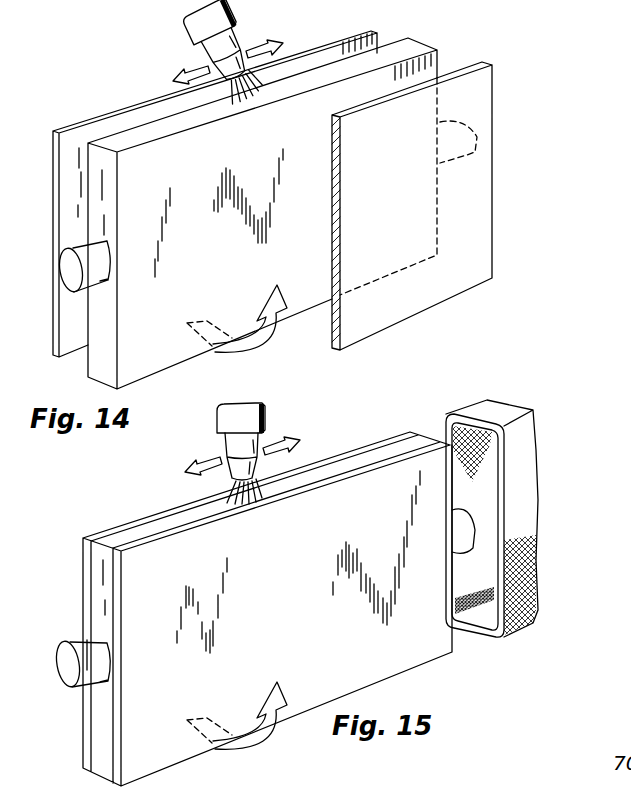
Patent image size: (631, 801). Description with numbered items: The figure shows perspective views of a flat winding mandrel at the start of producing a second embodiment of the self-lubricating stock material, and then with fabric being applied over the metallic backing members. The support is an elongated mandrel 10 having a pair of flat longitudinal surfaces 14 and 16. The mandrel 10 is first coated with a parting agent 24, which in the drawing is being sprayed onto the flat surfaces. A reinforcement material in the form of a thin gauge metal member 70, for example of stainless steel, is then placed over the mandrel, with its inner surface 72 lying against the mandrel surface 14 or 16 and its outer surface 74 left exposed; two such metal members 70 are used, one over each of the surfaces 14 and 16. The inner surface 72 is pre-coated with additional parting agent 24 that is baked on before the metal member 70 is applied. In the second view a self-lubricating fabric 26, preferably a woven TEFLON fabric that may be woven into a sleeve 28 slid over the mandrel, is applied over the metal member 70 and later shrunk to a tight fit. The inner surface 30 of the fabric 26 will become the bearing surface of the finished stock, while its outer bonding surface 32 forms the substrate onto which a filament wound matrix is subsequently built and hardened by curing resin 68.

In FIG. 14, the elongated mandrel 10 is at (95, 208).
In FIG. 15, the elongated mandrel 10 is at (100, 730).
In FIG. 14, the flat longitudinal surface 14 is at (88, 363).
In FIG. 15, the flat longitudinal surface 14 is at (264, 599).
In FIG. 14, the flat longitudinal surface 16 is at (163, 150).
In FIG. 15, the flat longitudinal surface 16 is at (388, 390).
In FIG. 14, the parting agent 24 is at (188, 28).
In FIG. 15, the self-lubricating fabric 26 is at (497, 402).
In FIG. 15, the sleeve 28 is at (548, 487).
In FIG. 15, the inner surface of fabric 30 is at (447, 423).
In FIG. 15, the outer or bonding surface of fabric 32 is at (515, 633).
In FIG. 15, the resin 68 is at (253, 413).
In FIG. 14, the thin gauge metal member 70 is at (377, 32).
In FIG. 14, the inner surface of metal member 72 is at (68, 161).
In FIG. 14, the outer surface of metal member 74 is at (463, 182).